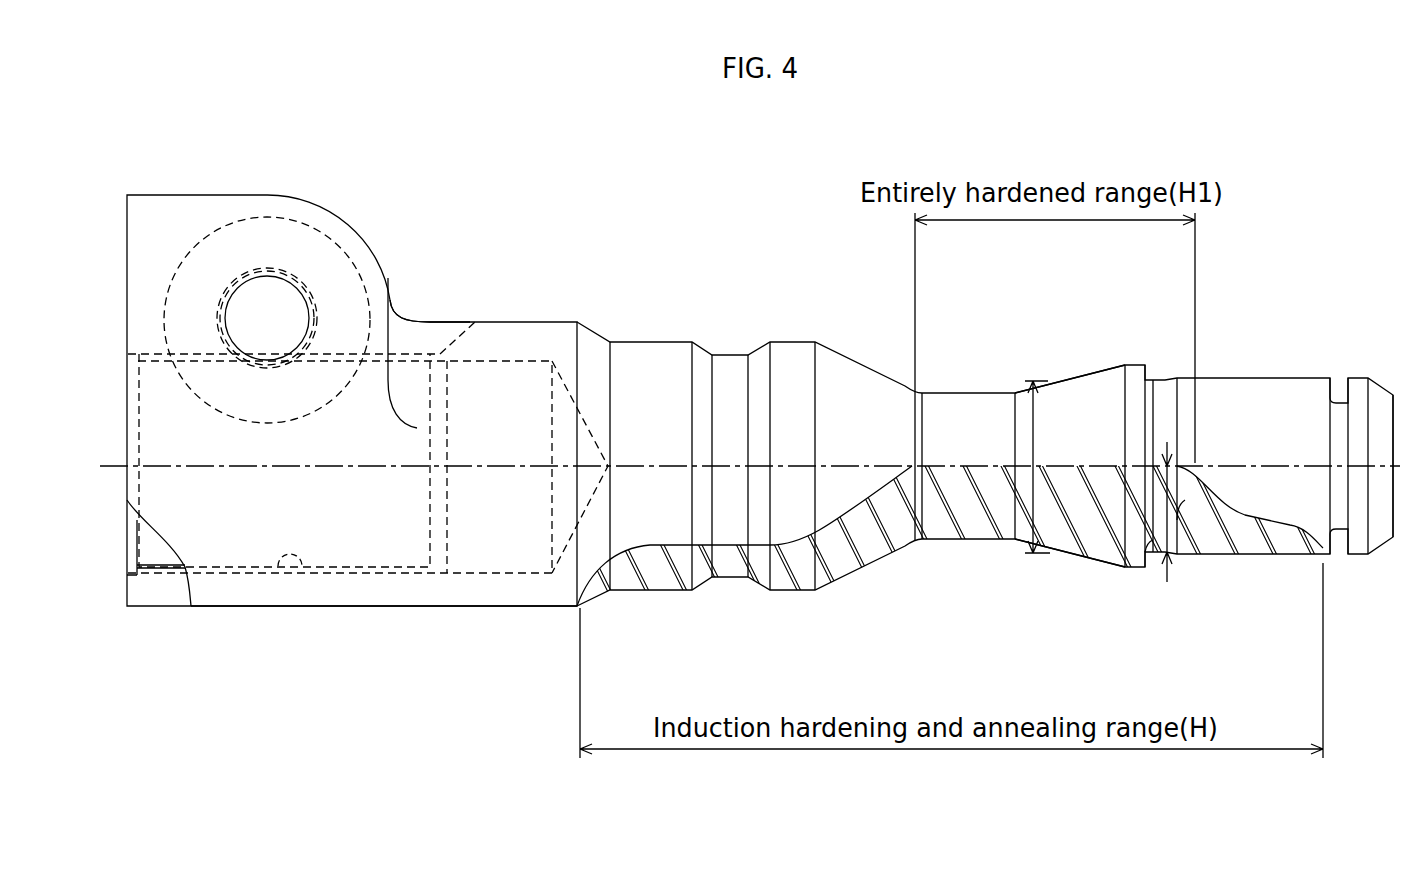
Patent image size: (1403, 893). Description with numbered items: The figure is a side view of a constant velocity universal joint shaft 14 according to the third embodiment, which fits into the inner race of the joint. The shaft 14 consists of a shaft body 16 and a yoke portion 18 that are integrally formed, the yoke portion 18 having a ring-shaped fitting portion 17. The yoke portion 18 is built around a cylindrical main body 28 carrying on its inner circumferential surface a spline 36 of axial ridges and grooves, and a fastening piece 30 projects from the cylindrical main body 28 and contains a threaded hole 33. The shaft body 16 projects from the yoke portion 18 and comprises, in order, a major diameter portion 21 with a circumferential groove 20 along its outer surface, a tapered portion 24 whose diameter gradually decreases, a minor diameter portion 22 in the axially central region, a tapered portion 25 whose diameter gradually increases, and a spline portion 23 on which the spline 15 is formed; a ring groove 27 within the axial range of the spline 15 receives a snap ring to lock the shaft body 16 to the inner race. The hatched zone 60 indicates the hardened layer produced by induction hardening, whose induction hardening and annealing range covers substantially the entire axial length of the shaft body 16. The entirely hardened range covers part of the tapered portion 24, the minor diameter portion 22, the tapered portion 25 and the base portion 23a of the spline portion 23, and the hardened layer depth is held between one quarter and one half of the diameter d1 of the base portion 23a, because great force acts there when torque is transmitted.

The shaft 14 is at (565, 258).
The fastening piece 30 is at (165, 210).
The threaded hole 33 is at (258, 283).
The yoke portion 18 is at (436, 309).
The ring-shaped fitting portion 17 is at (147, 554).
The spline 36 is at (298, 574).
The cylindrical main body 28 is at (413, 607).
The major diameter portion 21 is at (652, 358).
The circumferential groove 20 is at (728, 368).
The tapered portion 24 is at (858, 380).
The minor diameter portion 22 is at (968, 398).
The tapered portion 25 is at (1078, 390).
The shaft body 16 is at (1113, 349).
The spline 15 is at (1217, 378).
The spline portion 23 is at (1285, 404).
The ring groove 27 is at (1340, 395).
The hardened layer 60 is at (907, 545).
The diameter of the base portion d1 is at (1036, 428).
The base portion 23a is at (1180, 510).